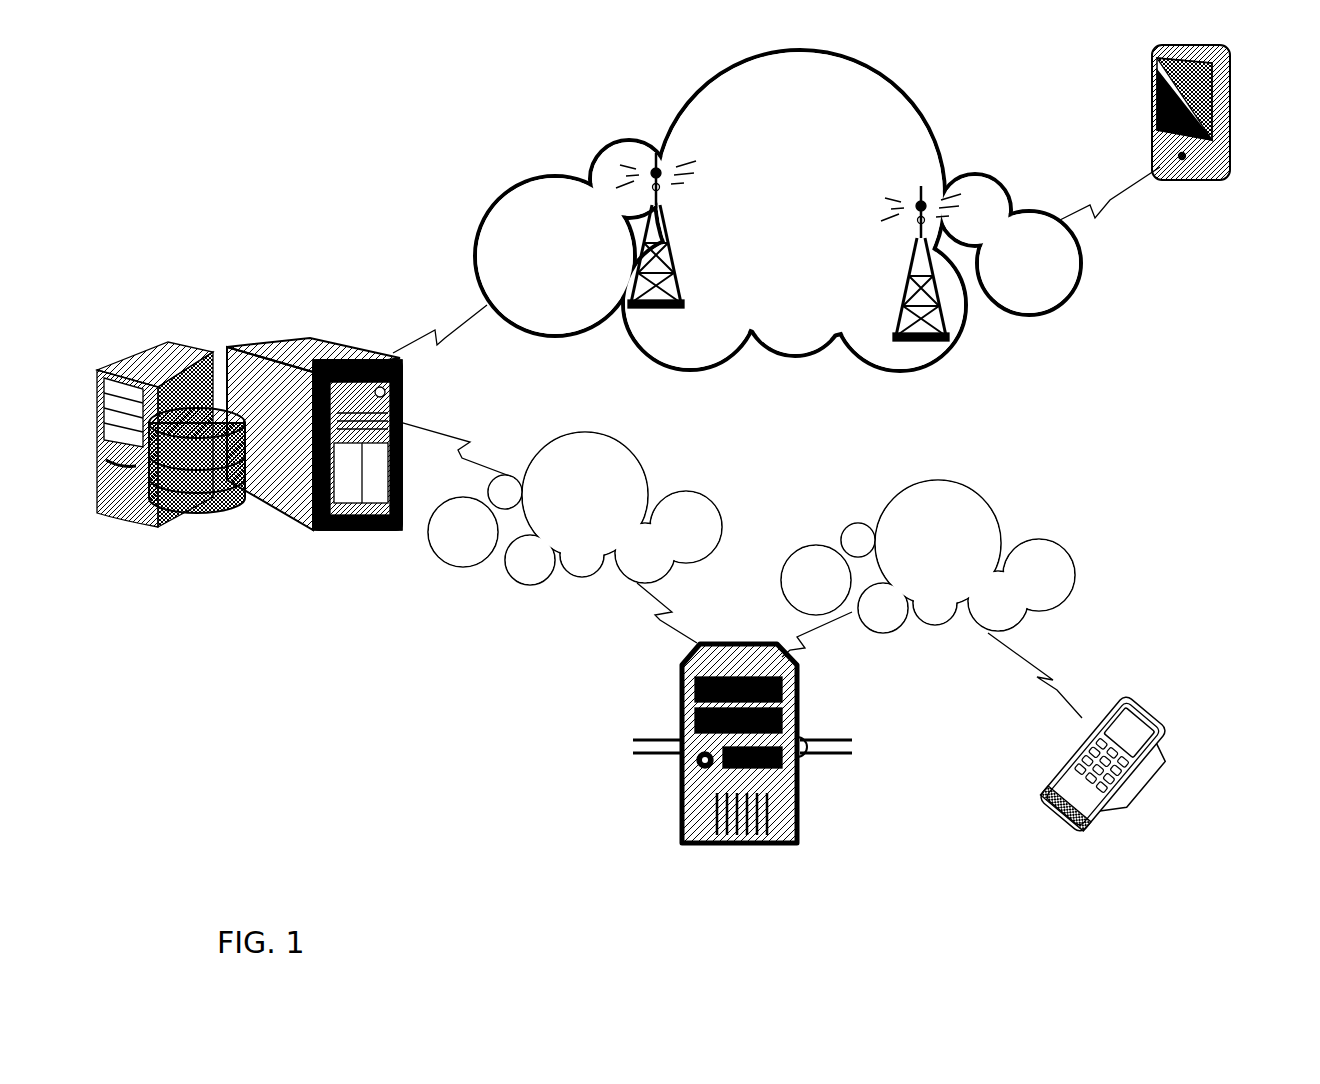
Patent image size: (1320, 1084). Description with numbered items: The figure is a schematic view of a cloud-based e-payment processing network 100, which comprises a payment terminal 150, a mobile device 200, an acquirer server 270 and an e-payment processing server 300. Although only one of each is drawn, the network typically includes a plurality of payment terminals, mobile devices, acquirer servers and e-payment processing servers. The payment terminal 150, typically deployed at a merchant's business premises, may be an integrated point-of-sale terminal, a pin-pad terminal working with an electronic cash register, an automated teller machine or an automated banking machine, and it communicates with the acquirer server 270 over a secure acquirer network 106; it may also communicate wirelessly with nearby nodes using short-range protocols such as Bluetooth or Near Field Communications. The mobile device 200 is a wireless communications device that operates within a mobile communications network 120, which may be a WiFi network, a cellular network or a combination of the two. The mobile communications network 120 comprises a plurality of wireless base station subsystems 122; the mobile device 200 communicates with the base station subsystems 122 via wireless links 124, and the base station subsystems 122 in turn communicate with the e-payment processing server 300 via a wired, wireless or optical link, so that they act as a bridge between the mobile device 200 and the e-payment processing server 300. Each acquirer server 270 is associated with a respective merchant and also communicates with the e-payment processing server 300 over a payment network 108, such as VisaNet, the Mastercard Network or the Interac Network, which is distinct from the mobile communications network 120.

The e-payment processing network 100 is at (403, 780).
The acquirer network 106 is at (1000, 528).
The payment network 108 is at (642, 462).
The mobile communications network 120 is at (925, 367).
The wireless base station subsystem 122 is at (677, 245).
The wireless link 124 is at (1113, 203).
The payment terminal 150 is at (1137, 702).
The mobile device 200 is at (1232, 162).
The acquirer server 270 is at (680, 802).
The e-payment processing server 300 is at (390, 347).